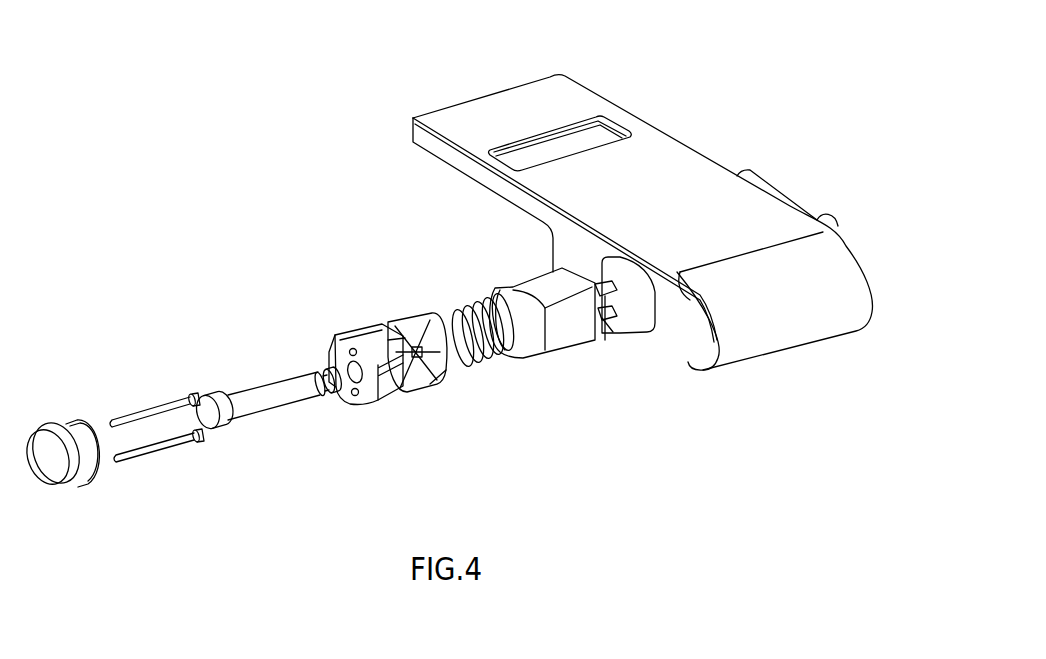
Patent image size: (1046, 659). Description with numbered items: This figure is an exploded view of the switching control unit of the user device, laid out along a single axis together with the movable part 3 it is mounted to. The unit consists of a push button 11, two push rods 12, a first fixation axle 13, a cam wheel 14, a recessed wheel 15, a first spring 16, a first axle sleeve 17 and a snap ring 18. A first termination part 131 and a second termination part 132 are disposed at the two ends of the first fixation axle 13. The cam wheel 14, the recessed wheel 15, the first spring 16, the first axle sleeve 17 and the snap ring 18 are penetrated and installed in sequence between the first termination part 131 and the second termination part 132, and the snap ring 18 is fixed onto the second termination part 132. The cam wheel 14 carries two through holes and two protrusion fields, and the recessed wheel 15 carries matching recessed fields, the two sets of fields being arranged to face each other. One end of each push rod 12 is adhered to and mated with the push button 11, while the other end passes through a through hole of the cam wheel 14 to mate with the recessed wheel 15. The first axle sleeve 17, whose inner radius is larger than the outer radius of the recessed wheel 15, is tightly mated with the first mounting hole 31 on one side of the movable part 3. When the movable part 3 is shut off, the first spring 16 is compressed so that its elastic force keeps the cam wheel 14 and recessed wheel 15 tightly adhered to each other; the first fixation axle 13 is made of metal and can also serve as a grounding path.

The movable part 3 is at (685, 233).
The first mounting hole 31 is at (648, 300).
The push button 11 is at (58, 422).
The push rods 12 is at (135, 418).
The first fixation axle 13 is at (250, 395).
The first termination part 131 is at (208, 402).
The second termination part 132 is at (333, 365).
The cam wheel 14 is at (370, 342).
The recessed wheel 15 is at (418, 338).
The first spring 16 is at (456, 302).
The first axle sleeve 17 is at (582, 330).
The snap ring 18 is at (613, 318).